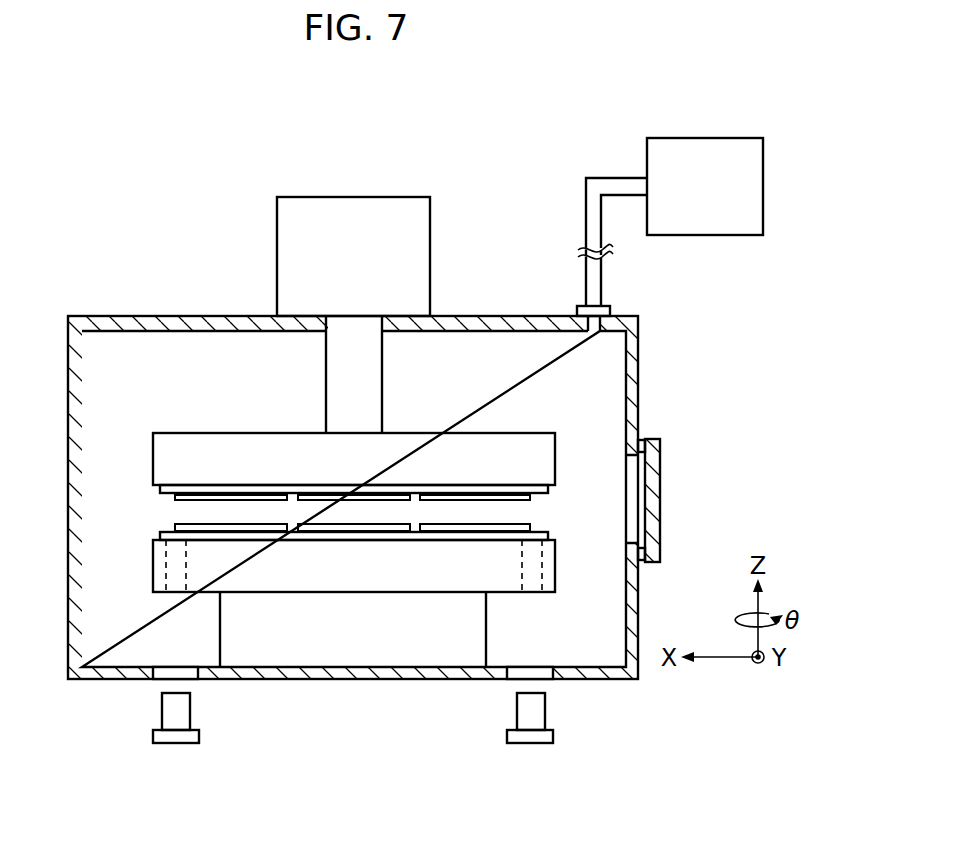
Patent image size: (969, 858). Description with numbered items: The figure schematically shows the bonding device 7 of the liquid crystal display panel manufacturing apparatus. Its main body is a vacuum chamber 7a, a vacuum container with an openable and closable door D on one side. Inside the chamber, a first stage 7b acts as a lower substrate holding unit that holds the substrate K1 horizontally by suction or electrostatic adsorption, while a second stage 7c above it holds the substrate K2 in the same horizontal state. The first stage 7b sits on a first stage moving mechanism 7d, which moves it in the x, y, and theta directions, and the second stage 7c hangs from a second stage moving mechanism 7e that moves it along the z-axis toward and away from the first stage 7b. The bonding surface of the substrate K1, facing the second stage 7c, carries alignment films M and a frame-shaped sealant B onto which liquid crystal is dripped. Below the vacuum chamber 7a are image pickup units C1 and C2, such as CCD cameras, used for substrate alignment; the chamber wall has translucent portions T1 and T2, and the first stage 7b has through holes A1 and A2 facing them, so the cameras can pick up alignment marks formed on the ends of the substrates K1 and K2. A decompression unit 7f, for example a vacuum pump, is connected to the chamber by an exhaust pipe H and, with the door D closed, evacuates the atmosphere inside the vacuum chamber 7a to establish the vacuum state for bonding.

The bonding device 7 is at (82, 242).
The vacuum chamber 7a is at (68, 342).
The first stage 7b is at (153, 570).
The second stage 7c is at (178, 432).
The first stage moving mechanism 7d is at (361, 651).
The second stage moving mechanism 7e is at (367, 196).
The decompression unit 7f is at (707, 137).
The exhaust pipe H is at (603, 279).
The door D is at (662, 480).
The alignment films M is at (522, 503).
The frame-shaped sealant B is at (525, 524).
The substrate K1 is at (160, 528).
The substrate K2 is at (160, 498).
The through hole A1 is at (176, 593).
The through hole A2 is at (532, 593).
The translucent portion T1 is at (163, 680).
The translucent portion T2 is at (516, 680).
The image pickup unit C1 is at (184, 709).
The image pickup unit C2 is at (541, 709).